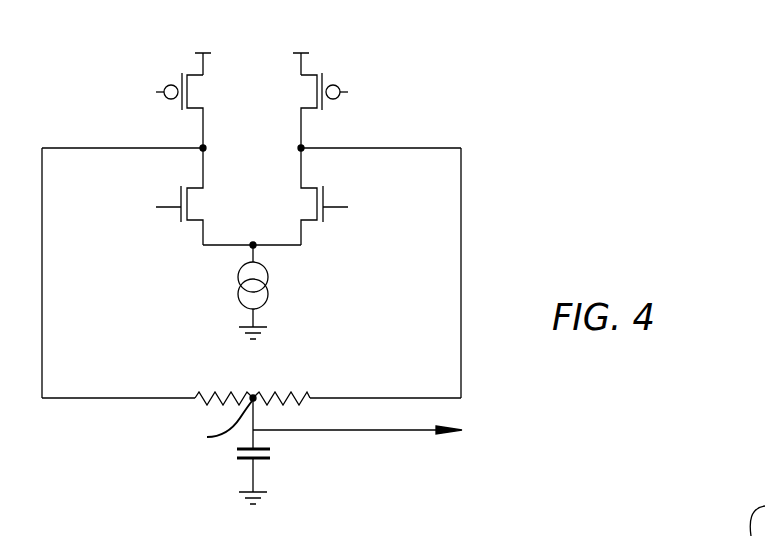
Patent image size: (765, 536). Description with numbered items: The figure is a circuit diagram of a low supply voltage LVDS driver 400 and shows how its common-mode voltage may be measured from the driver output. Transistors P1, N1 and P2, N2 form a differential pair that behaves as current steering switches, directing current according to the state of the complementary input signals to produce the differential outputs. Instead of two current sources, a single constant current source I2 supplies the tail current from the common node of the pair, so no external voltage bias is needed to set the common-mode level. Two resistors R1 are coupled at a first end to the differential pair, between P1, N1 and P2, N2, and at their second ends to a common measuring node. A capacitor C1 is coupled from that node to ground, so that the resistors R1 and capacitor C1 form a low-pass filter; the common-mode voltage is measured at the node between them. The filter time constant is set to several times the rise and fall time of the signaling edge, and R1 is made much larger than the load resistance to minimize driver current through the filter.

The LVDS driver circuit 400 is at (518, 178).
The transistor P1 is at (191, 110).
The transistor P2 is at (313, 110).
The transistor N1 is at (193, 196).
The transistor N2 is at (312, 196).
The constant current source I2 is at (233, 292).
The resistors R1 is at (252, 385).
The capacitor C1 is at (271, 474).